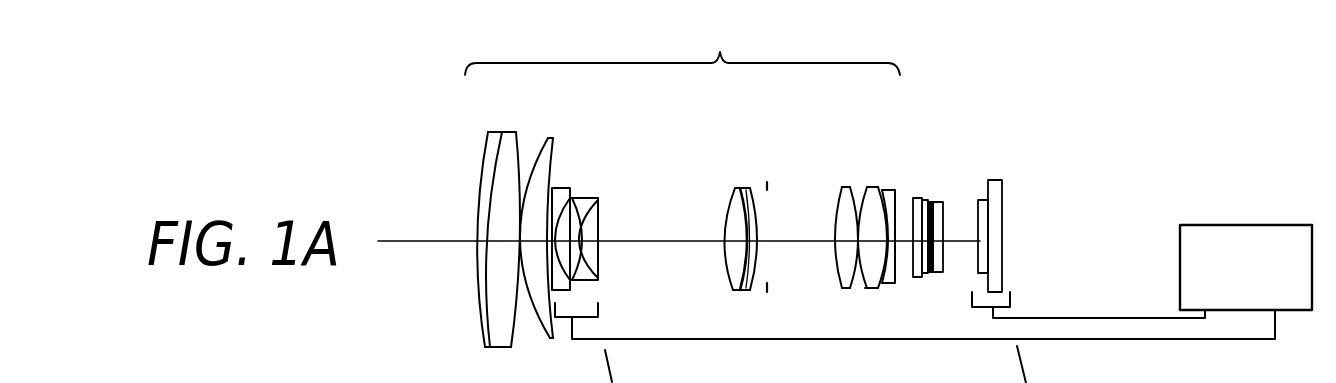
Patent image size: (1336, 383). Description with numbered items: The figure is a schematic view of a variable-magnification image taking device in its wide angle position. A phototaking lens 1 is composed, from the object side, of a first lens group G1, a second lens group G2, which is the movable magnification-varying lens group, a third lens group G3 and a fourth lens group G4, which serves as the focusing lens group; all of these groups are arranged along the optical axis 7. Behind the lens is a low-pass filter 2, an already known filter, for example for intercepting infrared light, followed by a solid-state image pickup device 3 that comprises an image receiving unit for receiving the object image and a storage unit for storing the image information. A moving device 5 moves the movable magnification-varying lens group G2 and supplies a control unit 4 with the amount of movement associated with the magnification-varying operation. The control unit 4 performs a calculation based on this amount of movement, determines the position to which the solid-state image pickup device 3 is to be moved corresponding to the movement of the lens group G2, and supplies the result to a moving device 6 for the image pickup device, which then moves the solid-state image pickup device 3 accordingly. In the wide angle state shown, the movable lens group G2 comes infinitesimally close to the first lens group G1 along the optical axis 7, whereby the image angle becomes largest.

The phototaking lens 1 is at (682, 44).
The first lens group G1 is at (562, 123).
The second lens group G2 is at (612, 180).
The third lens group G3 is at (762, 180).
The fourth lens group G4 is at (900, 180).
The low-pass filter 2 is at (938, 203).
The solid-state image pickup device 3 is at (995, 185).
The control unit 4 is at (1280, 225).
The moving device 5 is at (598, 305).
The moving device for the solid-state image pickup device 6 is at (1010, 300).
The optical axis 7 is at (642, 238).